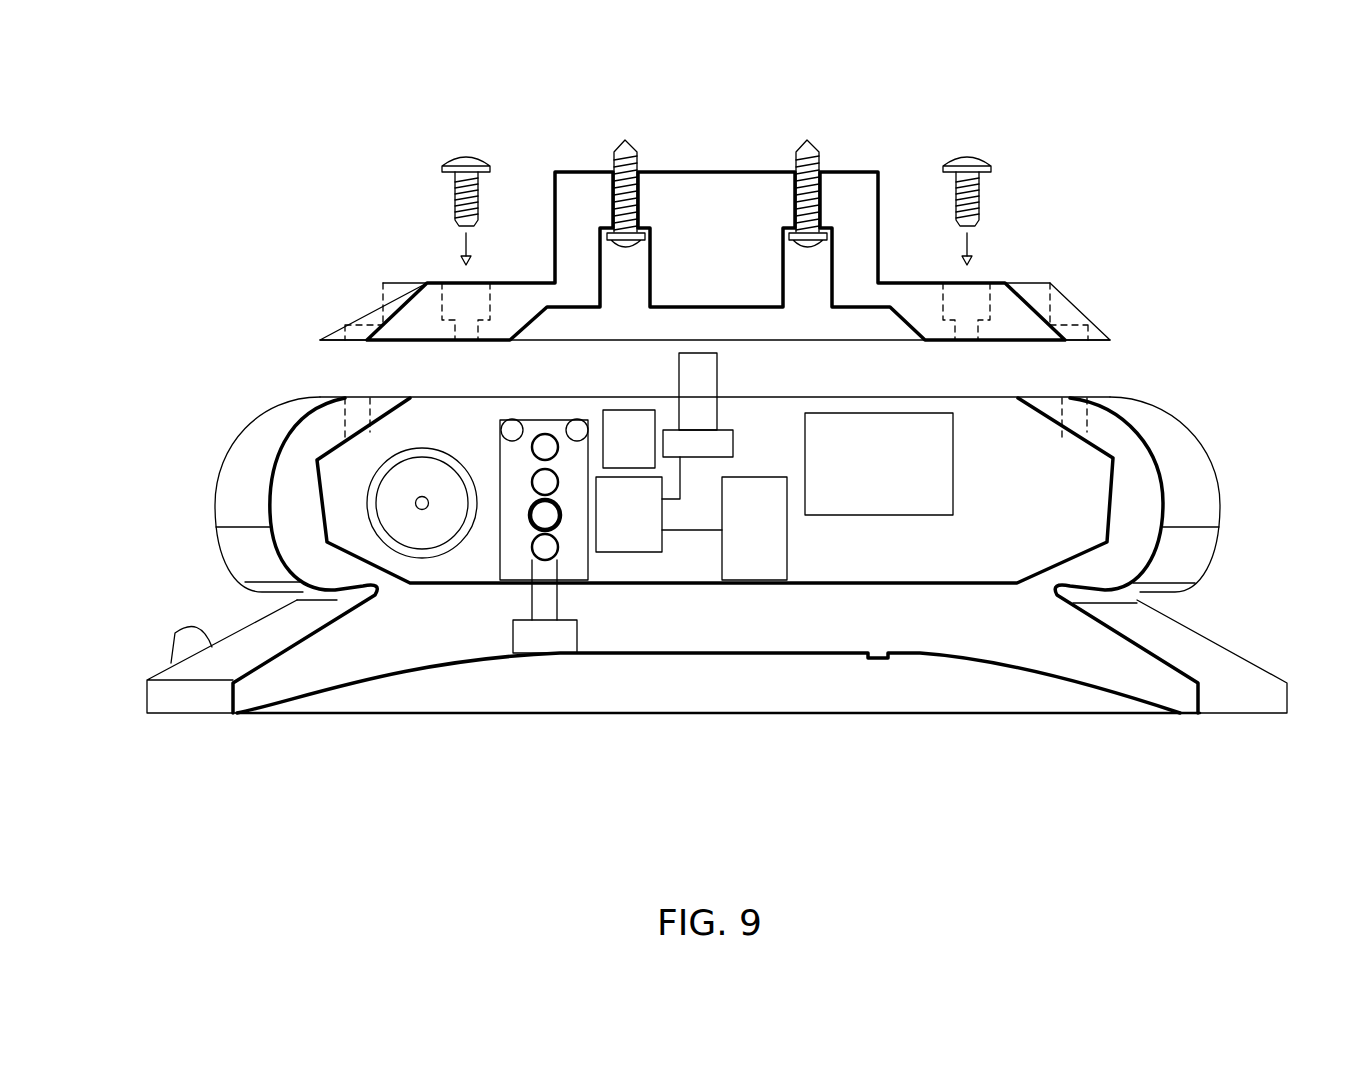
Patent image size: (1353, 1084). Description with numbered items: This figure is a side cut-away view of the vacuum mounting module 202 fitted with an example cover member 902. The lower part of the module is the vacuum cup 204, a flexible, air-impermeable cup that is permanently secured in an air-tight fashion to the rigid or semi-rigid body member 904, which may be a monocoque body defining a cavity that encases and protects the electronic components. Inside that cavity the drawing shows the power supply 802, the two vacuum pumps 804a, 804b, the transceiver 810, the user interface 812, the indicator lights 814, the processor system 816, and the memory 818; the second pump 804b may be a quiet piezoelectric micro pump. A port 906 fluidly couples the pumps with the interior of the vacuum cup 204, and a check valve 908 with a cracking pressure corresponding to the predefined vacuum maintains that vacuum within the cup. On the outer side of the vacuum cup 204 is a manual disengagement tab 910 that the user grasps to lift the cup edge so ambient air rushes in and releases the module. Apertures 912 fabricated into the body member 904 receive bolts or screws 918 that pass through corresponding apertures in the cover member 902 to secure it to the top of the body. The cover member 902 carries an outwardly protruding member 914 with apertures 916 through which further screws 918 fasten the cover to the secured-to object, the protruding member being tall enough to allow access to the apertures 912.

The vacuum mounting module 202 is at (1169, 158).
The vacuum cup 204 is at (1197, 640).
The power supply 802 is at (897, 475).
The first vacuum pump 804a is at (545, 417).
The second vacuum pump 804b is at (427, 540).
The transceiver 810 is at (648, 455).
The user interface 812 is at (758, 441).
The indicator lights 814 is at (717, 372).
The processor system 816 is at (650, 528).
The memory 818 is at (775, 540).
The cover member 902 is at (749, 120).
The body member 904 is at (220, 487).
The port 906 is at (558, 597).
The check valve 908 is at (547, 642).
The manual disengagement tab 910 is at (180, 623).
The apertures 912 is at (465, 290).
The outwardly protruding member 914 is at (582, 173).
The apertures 916 is at (625, 297).
The bolts or screws 918 is at (466, 157).